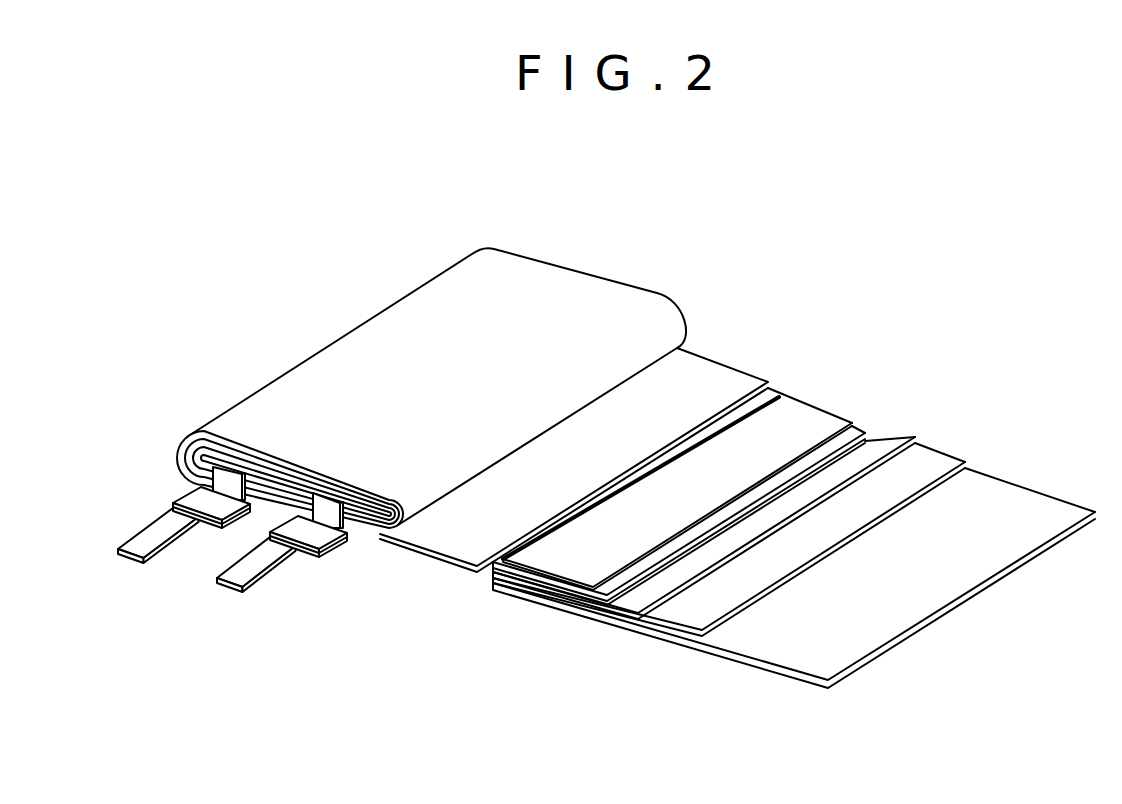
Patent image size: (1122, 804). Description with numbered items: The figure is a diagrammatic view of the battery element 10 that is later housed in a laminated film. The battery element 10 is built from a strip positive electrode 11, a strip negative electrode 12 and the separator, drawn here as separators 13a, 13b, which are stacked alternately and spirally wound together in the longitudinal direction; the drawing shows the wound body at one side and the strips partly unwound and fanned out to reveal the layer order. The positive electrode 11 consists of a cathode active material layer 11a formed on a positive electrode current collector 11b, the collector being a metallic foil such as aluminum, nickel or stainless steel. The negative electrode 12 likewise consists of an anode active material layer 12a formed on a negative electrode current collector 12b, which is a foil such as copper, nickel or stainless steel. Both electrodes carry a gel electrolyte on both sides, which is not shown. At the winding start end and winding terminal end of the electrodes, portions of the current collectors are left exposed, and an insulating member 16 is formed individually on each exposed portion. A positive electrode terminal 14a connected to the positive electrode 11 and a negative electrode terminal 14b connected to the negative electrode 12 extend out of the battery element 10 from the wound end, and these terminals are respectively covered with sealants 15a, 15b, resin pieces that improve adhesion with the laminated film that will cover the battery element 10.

The battery element 10 is at (382, 288).
The positive electrode 11 is at (637, 564).
The cathode active material layer 11a is at (640, 542).
The positive electrode current collector 11b is at (598, 597).
The negative electrode 12 is at (794, 602).
The anode active material layer 12a is at (678, 612).
The negative electrode current collector 12b is at (743, 642).
The separator 13a is at (710, 375).
The separator 13b is at (880, 445).
The positive electrode terminal 14a is at (237, 572).
The negative electrode terminal 14b is at (137, 547).
The sealant 15a is at (313, 555).
The sealant 15b is at (182, 493).
The insulating member 16 is at (798, 420).